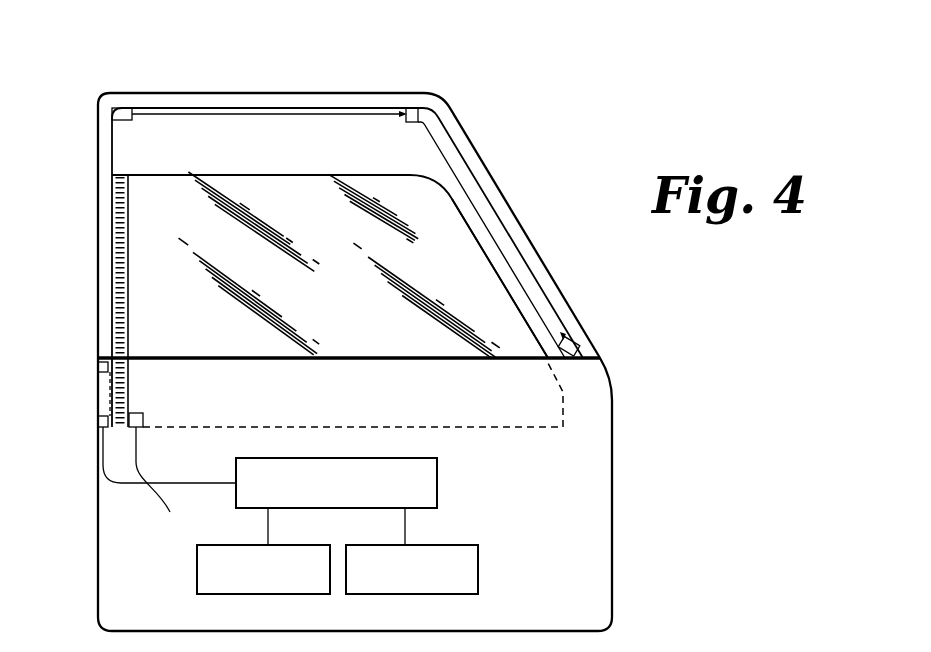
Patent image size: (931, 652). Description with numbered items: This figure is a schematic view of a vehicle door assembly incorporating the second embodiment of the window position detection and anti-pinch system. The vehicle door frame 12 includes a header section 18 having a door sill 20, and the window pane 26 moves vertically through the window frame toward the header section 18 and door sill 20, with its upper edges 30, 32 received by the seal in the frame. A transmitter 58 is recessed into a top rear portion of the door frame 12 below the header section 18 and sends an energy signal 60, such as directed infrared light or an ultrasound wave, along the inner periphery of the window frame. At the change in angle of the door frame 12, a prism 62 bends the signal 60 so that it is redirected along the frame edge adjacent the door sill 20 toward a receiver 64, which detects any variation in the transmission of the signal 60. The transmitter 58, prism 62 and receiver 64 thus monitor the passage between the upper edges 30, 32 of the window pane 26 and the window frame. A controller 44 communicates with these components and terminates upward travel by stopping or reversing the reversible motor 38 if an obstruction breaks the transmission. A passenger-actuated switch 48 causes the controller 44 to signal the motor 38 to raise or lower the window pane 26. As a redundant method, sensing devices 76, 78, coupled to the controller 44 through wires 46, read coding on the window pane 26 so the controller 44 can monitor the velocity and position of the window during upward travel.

The vehicle door frame 12 is at (620, 555).
The header section 18 is at (188, 92).
The door sill 20 is at (472, 150).
The window pane 26 is at (442, 230).
The upper edge of window pane 30 is at (265, 175).
The upper edge of window pane 32 is at (483, 256).
The reversible motor 38 is at (197, 575).
The controller 44 is at (437, 483).
The wires 46 is at (170, 512).
The switch 48 is at (478, 576).
The transmitter 58 is at (110, 113).
The energy signal 60 is at (299, 112).
The prism 62 is at (426, 105).
The receiver 64 is at (576, 347).
The sensing device 76 is at (110, 233).
The sensing device 78 is at (147, 410).